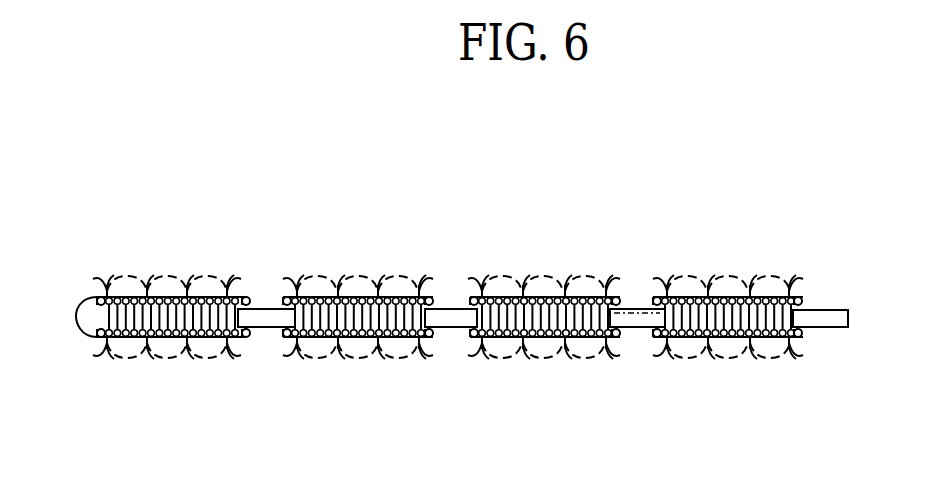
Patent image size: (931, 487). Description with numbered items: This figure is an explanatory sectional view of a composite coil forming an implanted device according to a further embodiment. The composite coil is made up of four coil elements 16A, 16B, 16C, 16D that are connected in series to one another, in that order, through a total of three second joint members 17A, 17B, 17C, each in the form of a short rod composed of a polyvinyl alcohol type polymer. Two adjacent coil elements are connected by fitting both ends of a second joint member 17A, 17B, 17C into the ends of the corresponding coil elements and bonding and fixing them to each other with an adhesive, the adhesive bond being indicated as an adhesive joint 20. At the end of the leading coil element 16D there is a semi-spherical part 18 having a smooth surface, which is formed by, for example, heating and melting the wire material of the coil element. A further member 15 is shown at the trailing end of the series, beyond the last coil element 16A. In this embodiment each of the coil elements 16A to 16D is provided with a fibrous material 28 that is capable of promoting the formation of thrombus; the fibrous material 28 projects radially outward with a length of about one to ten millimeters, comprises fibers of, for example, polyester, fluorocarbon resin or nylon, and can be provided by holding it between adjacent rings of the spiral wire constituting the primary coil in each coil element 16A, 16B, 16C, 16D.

The shaft 15 is at (830, 309).
The coil element 16A is at (692, 296).
The coil element 16B is at (503, 296).
The coil element 16C is at (362, 296).
The leading coil element 16D is at (185, 296).
The second joint member 17A is at (637, 330).
The second joint member 17B is at (447, 330).
The second joint member 17C is at (263, 330).
The semi-spherical part 18 is at (78, 308).
The adhesive joint 20 is at (262, 298).
The fibrous material 28 is at (592, 279).